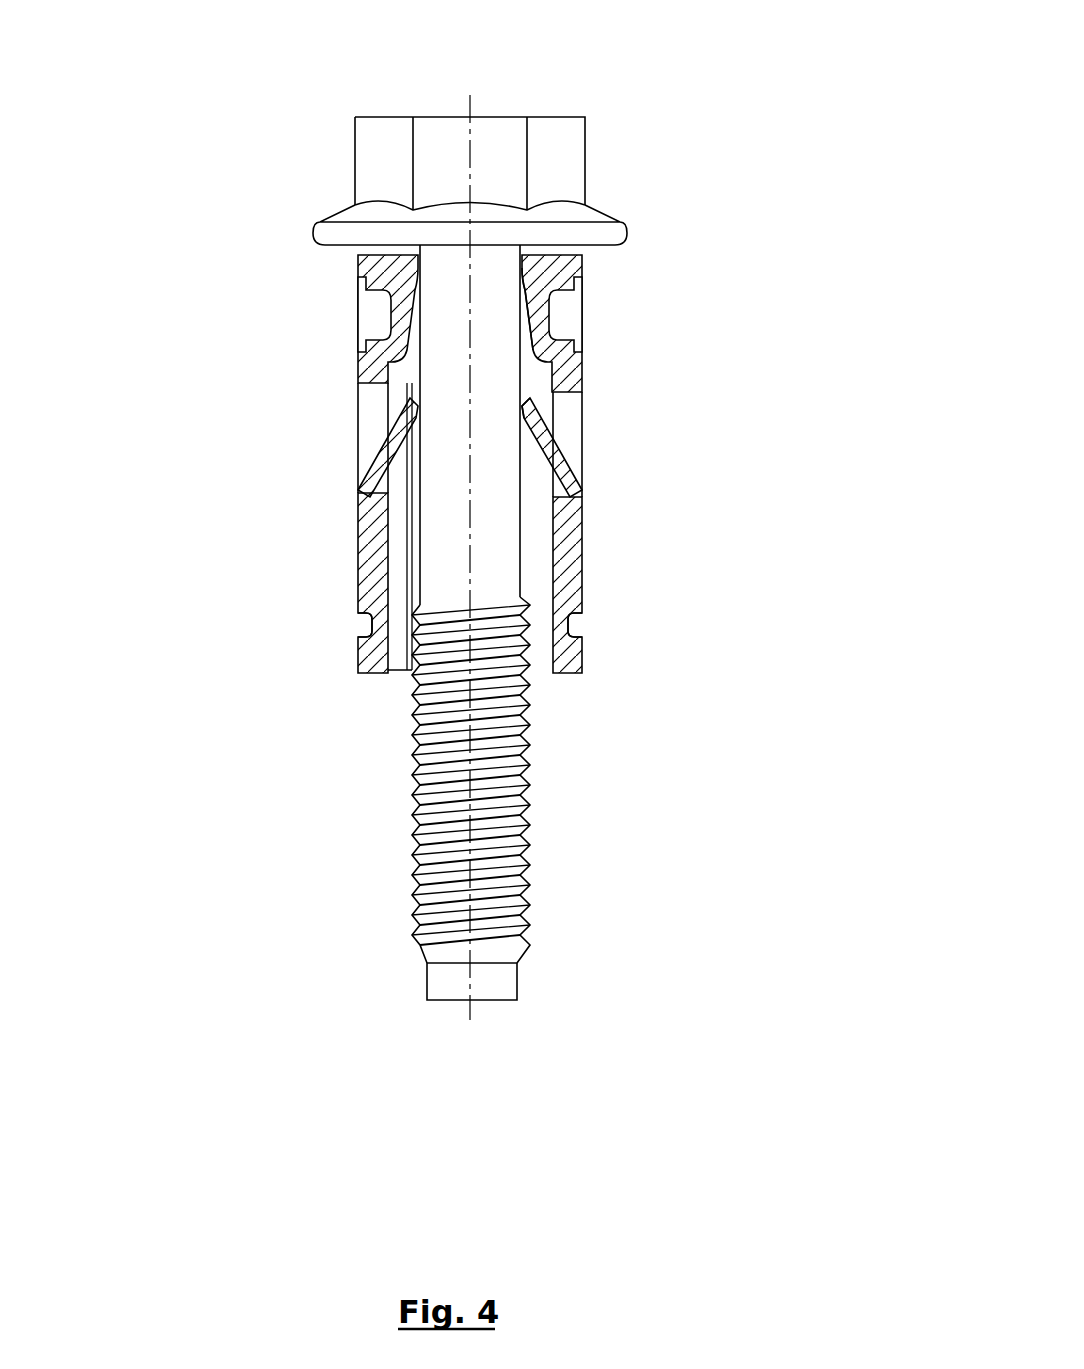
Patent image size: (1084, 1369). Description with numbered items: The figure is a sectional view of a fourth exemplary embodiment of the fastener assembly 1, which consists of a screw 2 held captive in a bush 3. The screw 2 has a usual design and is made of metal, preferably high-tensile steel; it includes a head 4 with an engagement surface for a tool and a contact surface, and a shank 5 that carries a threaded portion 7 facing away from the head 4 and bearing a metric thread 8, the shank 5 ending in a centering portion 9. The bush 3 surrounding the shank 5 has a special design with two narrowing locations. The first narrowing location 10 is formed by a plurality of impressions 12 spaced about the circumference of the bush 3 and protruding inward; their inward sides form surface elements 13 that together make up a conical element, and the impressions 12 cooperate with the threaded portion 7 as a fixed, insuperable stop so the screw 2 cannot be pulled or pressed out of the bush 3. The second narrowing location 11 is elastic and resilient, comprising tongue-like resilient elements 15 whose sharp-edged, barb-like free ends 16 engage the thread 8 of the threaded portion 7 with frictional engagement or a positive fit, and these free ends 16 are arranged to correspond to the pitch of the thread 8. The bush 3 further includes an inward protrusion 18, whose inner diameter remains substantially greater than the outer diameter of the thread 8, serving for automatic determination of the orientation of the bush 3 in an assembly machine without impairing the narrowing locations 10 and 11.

The fastener assembly 1 is at (732, 242).
The screw 2 is at (651, 425).
The bush 3 is at (473, 528).
The head 4 is at (587, 165).
The shank 5 is at (522, 385).
The threaded portion 7 is at (527, 723).
The thread 8 is at (528, 878).
The centering portion 9 is at (487, 983).
The first narrowing location 10 is at (403, 310).
The second narrowing location 11 is at (398, 437).
The impressions 12 is at (694, 317).
The surface elements 13 is at (528, 332).
The resilient elements 15 is at (694, 444).
The free ends 16 is at (525, 424).
The protrusion 18 is at (383, 625).